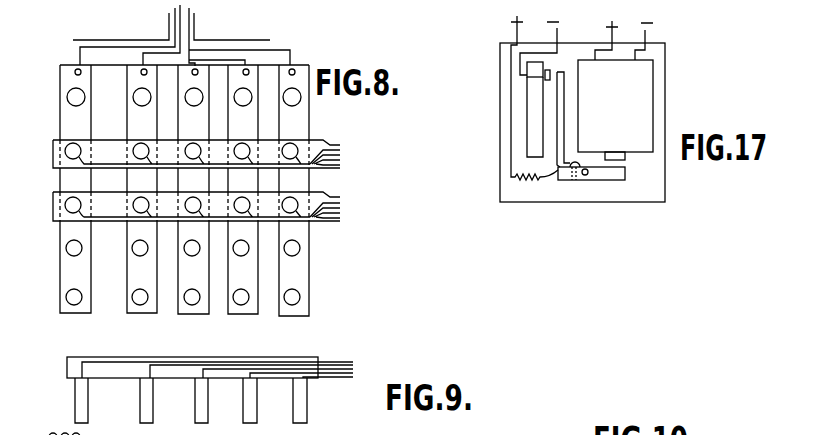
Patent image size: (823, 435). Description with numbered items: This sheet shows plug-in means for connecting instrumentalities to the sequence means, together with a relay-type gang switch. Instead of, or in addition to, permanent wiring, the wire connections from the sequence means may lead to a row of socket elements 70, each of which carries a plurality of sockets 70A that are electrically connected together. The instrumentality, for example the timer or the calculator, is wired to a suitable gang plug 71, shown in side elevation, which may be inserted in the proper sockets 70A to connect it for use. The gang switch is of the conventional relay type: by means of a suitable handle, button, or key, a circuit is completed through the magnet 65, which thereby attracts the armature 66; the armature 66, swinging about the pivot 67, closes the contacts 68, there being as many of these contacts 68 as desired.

In FIG. 8, the socket elements 70 is at (202, 315).
In FIG. 8, the sockets 70A is at (66, 297).
In FIG. 8, the gang plug 71 is at (314, 140).
In FIG. 9, the gang plug 71 is at (127, 357).
In FIG. 17, the magnet 65 is at (615, 110).
In FIG. 17, the armature 66 is at (613, 180).
In FIG. 17, the pivot 67 is at (586, 176).
In FIG. 17, the contacts 68 is at (555, 78).